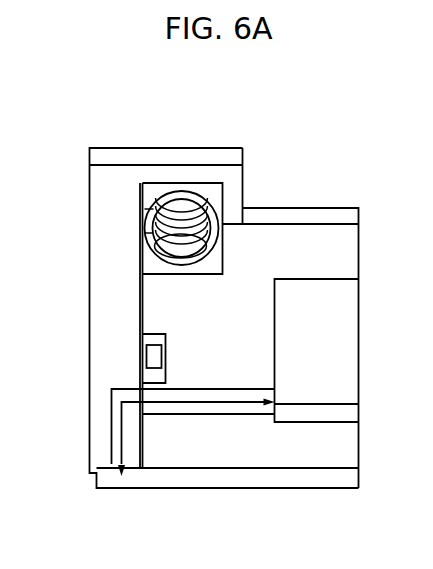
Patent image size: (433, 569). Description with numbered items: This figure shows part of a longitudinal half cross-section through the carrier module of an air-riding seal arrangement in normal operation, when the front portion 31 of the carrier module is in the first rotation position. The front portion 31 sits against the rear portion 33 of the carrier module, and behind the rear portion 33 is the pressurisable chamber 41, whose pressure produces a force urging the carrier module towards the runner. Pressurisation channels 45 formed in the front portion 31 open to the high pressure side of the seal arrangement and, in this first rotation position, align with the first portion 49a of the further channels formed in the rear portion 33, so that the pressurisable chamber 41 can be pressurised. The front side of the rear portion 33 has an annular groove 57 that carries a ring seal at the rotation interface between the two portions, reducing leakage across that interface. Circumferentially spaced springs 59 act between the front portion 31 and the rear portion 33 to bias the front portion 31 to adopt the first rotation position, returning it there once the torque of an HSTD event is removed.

The front portion 31 is at (86, 281).
The rear portion 33 is at (289, 200).
The pressurisable chamber 41 is at (338, 337).
The pressurisation channels 45 is at (123, 430).
The first portion of the further channels 49a is at (250, 413).
The annular groove 57 is at (157, 355).
The springs 59 is at (177, 197).